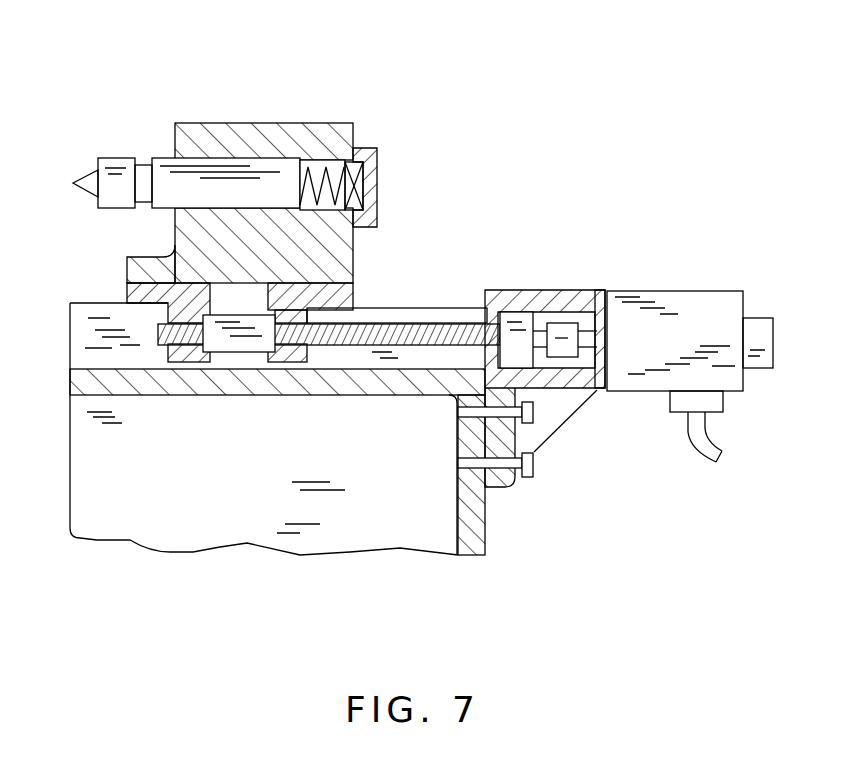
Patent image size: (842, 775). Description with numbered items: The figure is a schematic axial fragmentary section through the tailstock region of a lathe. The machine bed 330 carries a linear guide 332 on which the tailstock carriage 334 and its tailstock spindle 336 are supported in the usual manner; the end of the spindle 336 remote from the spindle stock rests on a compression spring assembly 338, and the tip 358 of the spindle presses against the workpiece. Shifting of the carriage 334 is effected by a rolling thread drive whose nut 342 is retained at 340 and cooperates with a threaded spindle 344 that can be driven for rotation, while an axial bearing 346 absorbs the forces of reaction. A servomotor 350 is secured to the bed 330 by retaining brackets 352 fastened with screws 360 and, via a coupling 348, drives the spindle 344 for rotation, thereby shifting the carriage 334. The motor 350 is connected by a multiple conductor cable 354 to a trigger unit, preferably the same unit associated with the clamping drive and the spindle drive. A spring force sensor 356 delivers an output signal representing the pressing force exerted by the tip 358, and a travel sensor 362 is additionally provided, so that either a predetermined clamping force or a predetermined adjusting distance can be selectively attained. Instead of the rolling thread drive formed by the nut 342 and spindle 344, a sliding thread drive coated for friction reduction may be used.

The machine bed 330 is at (307, 397).
The linear guide 332 is at (436, 295).
The tailstock carriage 334 is at (348, 252).
The tailstock spindle 336 is at (160, 158).
The compression spring assembly 338 is at (310, 170).
The nut retainer 340 is at (177, 353).
The nut 342 is at (250, 343).
The spindle 344 is at (427, 343).
The axial bearing 346 is at (515, 322).
The coupling 348 is at (563, 327).
The servomotor 350 is at (698, 328).
The retaining brackets 352 is at (510, 487).
The multiple conductor cable 354 is at (698, 447).
The spring force sensor 356 is at (358, 160).
The tip 358 is at (90, 180).
The screws 360 is at (528, 410).
The travel sensor 362 is at (758, 337).